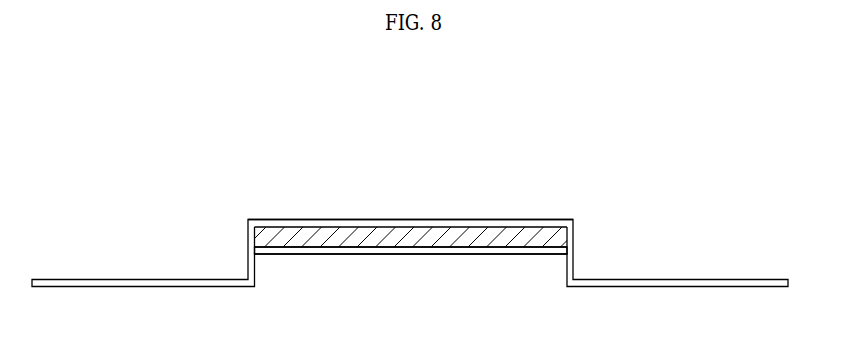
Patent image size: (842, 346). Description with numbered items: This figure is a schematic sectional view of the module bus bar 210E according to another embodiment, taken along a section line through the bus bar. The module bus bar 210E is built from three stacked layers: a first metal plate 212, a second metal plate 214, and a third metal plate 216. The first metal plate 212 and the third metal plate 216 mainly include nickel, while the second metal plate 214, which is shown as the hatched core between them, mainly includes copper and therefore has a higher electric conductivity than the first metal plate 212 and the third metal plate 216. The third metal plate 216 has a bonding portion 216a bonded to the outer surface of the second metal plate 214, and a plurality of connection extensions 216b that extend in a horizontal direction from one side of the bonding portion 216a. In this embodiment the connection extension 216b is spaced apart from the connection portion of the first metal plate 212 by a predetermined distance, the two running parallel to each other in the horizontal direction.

The module bus bar 210E is at (200, 148).
The first metal plate 212 is at (400, 257).
The second metal plate 214 is at (326, 234).
The third metal plate 216 is at (690, 177).
The bonding portion 216a is at (486, 219).
The connection extension 216b is at (660, 279).